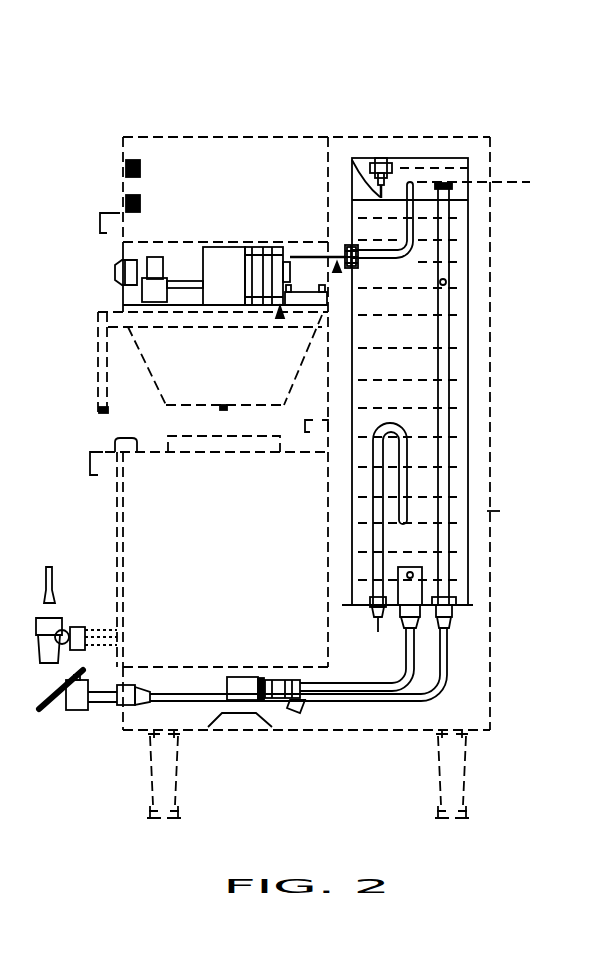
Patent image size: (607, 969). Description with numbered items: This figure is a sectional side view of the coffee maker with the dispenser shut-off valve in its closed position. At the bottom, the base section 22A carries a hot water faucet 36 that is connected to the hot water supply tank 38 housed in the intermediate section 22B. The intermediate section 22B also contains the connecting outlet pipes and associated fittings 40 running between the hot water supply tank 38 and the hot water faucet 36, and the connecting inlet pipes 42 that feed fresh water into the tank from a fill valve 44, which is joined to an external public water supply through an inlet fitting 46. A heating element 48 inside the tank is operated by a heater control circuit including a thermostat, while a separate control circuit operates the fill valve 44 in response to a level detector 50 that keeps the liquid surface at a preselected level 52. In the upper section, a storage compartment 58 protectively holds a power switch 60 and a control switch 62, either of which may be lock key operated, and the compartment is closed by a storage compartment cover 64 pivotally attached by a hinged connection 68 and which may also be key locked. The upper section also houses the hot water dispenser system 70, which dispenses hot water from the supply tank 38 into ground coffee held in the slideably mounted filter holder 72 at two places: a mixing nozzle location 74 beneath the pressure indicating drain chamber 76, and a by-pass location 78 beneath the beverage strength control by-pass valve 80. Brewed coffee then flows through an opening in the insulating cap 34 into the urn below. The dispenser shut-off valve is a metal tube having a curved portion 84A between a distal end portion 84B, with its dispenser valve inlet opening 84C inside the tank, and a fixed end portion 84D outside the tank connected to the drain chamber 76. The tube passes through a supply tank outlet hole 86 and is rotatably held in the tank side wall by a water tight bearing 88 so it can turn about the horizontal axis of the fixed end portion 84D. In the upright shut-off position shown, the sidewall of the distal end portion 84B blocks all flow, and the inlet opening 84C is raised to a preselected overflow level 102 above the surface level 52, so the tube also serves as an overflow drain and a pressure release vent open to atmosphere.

The base section 22A is at (150, 712).
The intermediate section 22B is at (490, 511).
The insulating cap 34 is at (223, 443).
The hot water faucet 36 is at (78, 714).
The hot water supply tank 38 is at (470, 420).
The outlet pipes and associated fittings 40 is at (440, 686).
The inlet pipes 42 is at (417, 655).
The fill valve 44 is at (237, 683).
The inlet fitting 46 is at (300, 705).
The heating element 48 is at (408, 478).
The level detector 50 is at (352, 158).
The preselected level 52 is at (492, 137).
The storage compartment 58 is at (230, 177).
The power switch 60 is at (125, 168).
The control switch 62 is at (125, 203).
The storage compartment cover 64 is at (137, 136).
The hinged connection 68 is at (328, 137).
The hot water dispenser system 70 is at (280, 318).
The filter holder 72 is at (215, 368).
The mixing nozzle location 74 is at (223, 308).
The pressure indicating drain chamber 76 is at (218, 260).
The by-pass location 78 is at (153, 306).
The beverage strength control by-pass valve 80 is at (120, 284).
The curved portion 84A is at (398, 250).
The distal end portion 84B is at (450, 209).
The dispenser valve inlet opening 84C is at (410, 175).
The fixed end portion 84D is at (257, 247).
The supply tank outlet hole 86 is at (358, 260).
The water tight bearing 88 is at (360, 266).
The preselected overflow level 102 is at (515, 182).